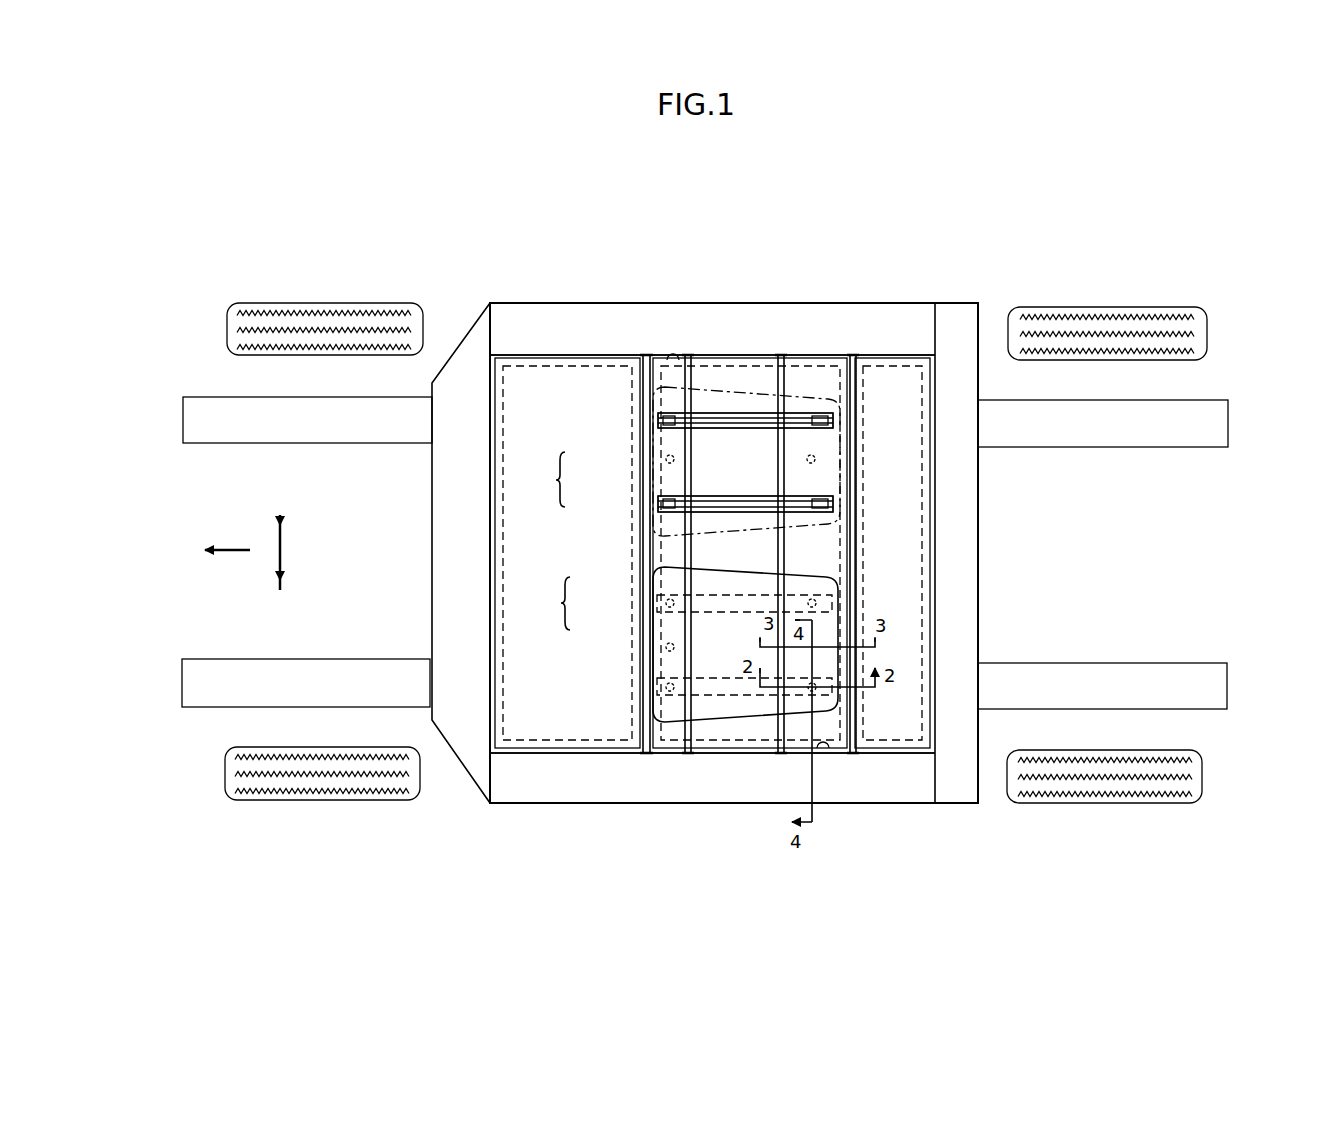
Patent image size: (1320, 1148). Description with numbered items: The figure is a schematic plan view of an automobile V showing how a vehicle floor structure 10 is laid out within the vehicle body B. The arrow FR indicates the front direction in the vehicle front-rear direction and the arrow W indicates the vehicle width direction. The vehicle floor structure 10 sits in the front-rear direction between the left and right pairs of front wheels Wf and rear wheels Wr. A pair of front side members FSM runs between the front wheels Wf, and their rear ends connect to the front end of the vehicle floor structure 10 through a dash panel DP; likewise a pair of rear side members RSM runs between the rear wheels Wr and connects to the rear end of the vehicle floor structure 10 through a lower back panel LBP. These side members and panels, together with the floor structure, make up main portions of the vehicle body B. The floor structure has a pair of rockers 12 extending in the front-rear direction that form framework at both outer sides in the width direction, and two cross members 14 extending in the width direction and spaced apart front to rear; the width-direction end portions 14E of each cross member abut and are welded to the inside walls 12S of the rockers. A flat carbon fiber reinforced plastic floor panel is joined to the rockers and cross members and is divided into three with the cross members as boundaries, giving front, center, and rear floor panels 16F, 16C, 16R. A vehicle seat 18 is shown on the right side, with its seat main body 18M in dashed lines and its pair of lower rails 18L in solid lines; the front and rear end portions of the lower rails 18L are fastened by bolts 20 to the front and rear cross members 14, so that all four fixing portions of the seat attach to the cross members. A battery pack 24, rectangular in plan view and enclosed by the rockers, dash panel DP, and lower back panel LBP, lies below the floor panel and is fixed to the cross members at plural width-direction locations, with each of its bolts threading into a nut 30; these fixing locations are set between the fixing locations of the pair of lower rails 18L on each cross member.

The vehicle floor structure 10 is at (842, 293).
The rocker 12 is at (597, 318).
The inside wall 12S is at (667, 355).
The cross member 14 is at (803, 377).
The vehicle width direction end portion 14E is at (680, 352).
The floor panel 16F is at (570, 722).
The floor panel 16C is at (737, 732).
The floor panel 16R is at (900, 540).
The vehicle seat 18 is at (549, 541).
The lower rail 18L is at (672, 508).
The seat main body 18M is at (668, 538).
The bolt 20 is at (673, 419).
The battery pack 24 is at (518, 730).
The nut 30 is at (674, 458).
The front wheel Wf is at (238, 330).
The rear wheel Wr is at (1200, 338).
The front side member FSM is at (367, 437).
The rear side member RSM is at (1134, 433).
The dash panel DP is at (440, 548).
The lower back panel LBP is at (950, 604).
The arrow FR is at (227, 524).
The arrow W is at (284, 569).
The automobile V is at (990, 220).
The vehicle body B is at (992, 265).